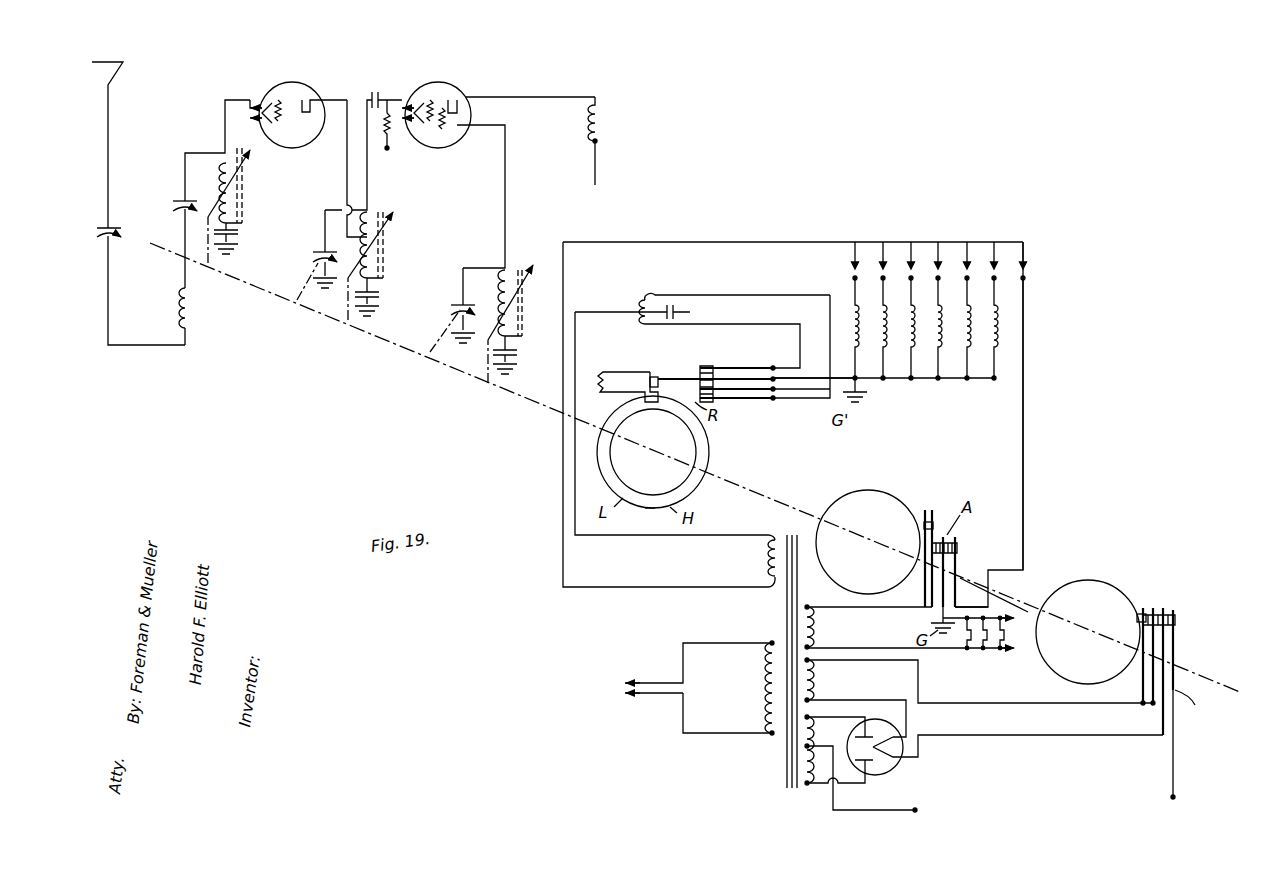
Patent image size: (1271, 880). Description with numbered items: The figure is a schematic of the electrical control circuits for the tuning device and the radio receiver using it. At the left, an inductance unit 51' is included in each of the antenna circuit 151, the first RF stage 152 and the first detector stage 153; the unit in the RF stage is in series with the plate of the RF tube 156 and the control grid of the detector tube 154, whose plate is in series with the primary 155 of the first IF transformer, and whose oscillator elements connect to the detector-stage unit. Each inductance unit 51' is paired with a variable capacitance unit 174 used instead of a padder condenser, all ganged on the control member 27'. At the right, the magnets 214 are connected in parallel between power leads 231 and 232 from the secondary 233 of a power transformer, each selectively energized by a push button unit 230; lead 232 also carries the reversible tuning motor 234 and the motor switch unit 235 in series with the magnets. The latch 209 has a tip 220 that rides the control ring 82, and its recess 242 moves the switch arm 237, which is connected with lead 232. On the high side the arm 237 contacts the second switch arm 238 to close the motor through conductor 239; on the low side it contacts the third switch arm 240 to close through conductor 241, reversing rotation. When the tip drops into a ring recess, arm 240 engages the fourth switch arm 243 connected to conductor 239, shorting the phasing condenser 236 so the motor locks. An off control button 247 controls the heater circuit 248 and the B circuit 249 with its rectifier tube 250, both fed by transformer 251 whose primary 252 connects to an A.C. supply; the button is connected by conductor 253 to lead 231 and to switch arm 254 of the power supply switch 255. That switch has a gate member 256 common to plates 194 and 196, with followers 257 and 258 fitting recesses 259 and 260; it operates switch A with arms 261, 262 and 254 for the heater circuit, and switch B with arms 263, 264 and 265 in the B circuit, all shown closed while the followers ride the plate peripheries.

The RF tube 156 is at (278, 90).
The detector tube 154 is at (458, 94).
The primary of first IF transformer 155 is at (604, 120).
The variable capacitance unit 174 is at (180, 200).
The inductance unit 51' is at (381, 261).
The first RF stage 152 is at (313, 178).
The first detector stage 153 is at (468, 180).
The antenna circuit 151 is at (136, 276).
The control member 27' is at (695, 454).
The power lead 231 is at (805, 242).
The push button unit 230 is at (940, 268).
The off control button 247 is at (1030, 270).
The tuning motor 234 is at (650, 300).
The conductor 239 is at (742, 295).
The phasing condenser 236 is at (681, 312).
The conductor 241 is at (811, 345).
The magnet 214 is at (1000, 325).
The latch 209 is at (606, 372).
The recess 242 is at (655, 377).
The second switch arm 238 is at (705, 366).
The motor switch unit 235 is at (747, 371).
The switch arm 237 is at (736, 380).
The third switch arm 240 is at (732, 390).
The fourth switch arm 243 is at (777, 400).
The power lead 232 is at (640, 535).
The conductor 253 is at (1027, 425).
The latch tip 220 is at (652, 402).
The control ring 82 is at (713, 463).
The plate 194 is at (882, 486).
The follower 257 is at (922, 515).
The gate member 256 is at (935, 512).
The power supply switch 255 is at (952, 556).
The switch arm 254 is at (957, 568).
The recess 259 is at (920, 525).
The switch arm 261 is at (925, 577).
The switch arm 262 is at (957, 593).
The secondary 233 is at (765, 566).
The transformer 251 is at (782, 638).
The heater circuit 248 is at (870, 635).
The primary 252 is at (765, 683).
The B circuit 249 is at (943, 688).
The rectifier tube 250 is at (903, 762).
The plate 196 is at (1093, 580).
The follower 258 is at (1143, 608).
The recess 260 is at (1140, 616).
The switch arm 263 is at (1160, 614).
The switch arm 264 is at (1175, 618).
The switch arm 265 is at (1175, 650).